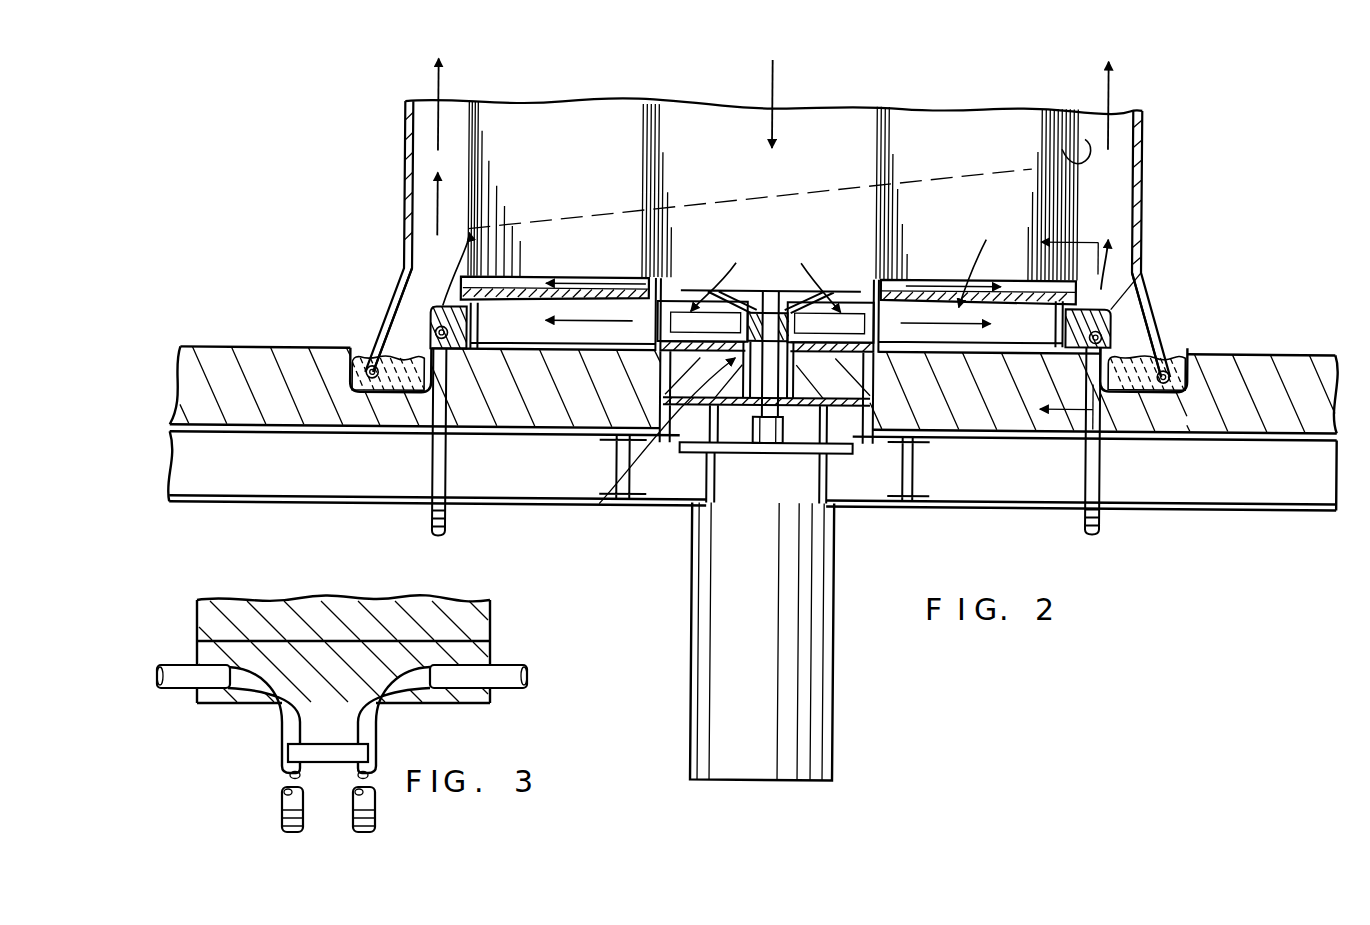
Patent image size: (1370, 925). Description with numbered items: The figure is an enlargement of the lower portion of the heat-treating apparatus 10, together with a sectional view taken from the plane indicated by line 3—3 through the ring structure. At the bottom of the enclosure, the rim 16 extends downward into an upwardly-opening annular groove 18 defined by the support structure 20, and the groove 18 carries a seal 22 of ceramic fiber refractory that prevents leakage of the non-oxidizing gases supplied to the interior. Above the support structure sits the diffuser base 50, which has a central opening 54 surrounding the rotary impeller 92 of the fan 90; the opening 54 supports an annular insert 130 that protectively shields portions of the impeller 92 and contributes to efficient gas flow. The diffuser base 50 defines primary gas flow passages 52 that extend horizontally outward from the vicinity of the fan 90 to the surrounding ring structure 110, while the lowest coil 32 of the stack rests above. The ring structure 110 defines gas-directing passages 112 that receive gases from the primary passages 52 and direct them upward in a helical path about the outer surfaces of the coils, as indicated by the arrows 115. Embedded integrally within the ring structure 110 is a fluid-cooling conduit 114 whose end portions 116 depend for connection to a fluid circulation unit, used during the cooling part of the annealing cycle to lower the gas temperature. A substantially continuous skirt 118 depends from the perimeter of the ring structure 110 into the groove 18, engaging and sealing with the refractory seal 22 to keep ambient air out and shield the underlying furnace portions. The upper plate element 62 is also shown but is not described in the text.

In FIG. 2, the heat-treating apparatus 10 is at (348, 181).
In FIG. 2, the coil of steel 32 is at (1098, 187).
In FIG. 2, the arrows 115 is at (410, 261).
In FIG. 2, the annular insert 130 is at (668, 255).
In FIG. 2, the diffuser base 50 is at (957, 256).
In FIG. 2, the rotary impeller 92 is at (788, 262).
In FIG. 2, the central opening 54 is at (740, 270).
In FIG. 2, the section line 3— 3 is at (1058, 330).
In FIG. 2, the upper annular plate 62 is at (552, 275).
In FIG. 2, the primary gas flow passages 52 is at (522, 354).
In FIG. 2, the fan 90 is at (600, 505).
In FIG. 2, the rim 16 is at (352, 436).
In FIG. 2, the support structure 20 is at (1285, 349).
In FIG. 2, the skirt 118 is at (433, 468).
In FIG. 2, the end portions 116 is at (443, 539).
In FIG. 3, the end portions 116 is at (354, 830).
In FIG. 2, the annular groove 18 is at (357, 348).
In FIG. 2, the seal 22 is at (398, 401).
In FIG. 2, the gas-directing passages 112 is at (422, 311).
In FIG. 2, the fluid-cooling conduit 114 is at (433, 335).
In FIG. 3, the fluid-cooling conduit 114 is at (174, 668).
In FIG. 2, the ring structure 110 is at (1125, 327).
In FIG. 3, the ring structure 110 is at (194, 648).